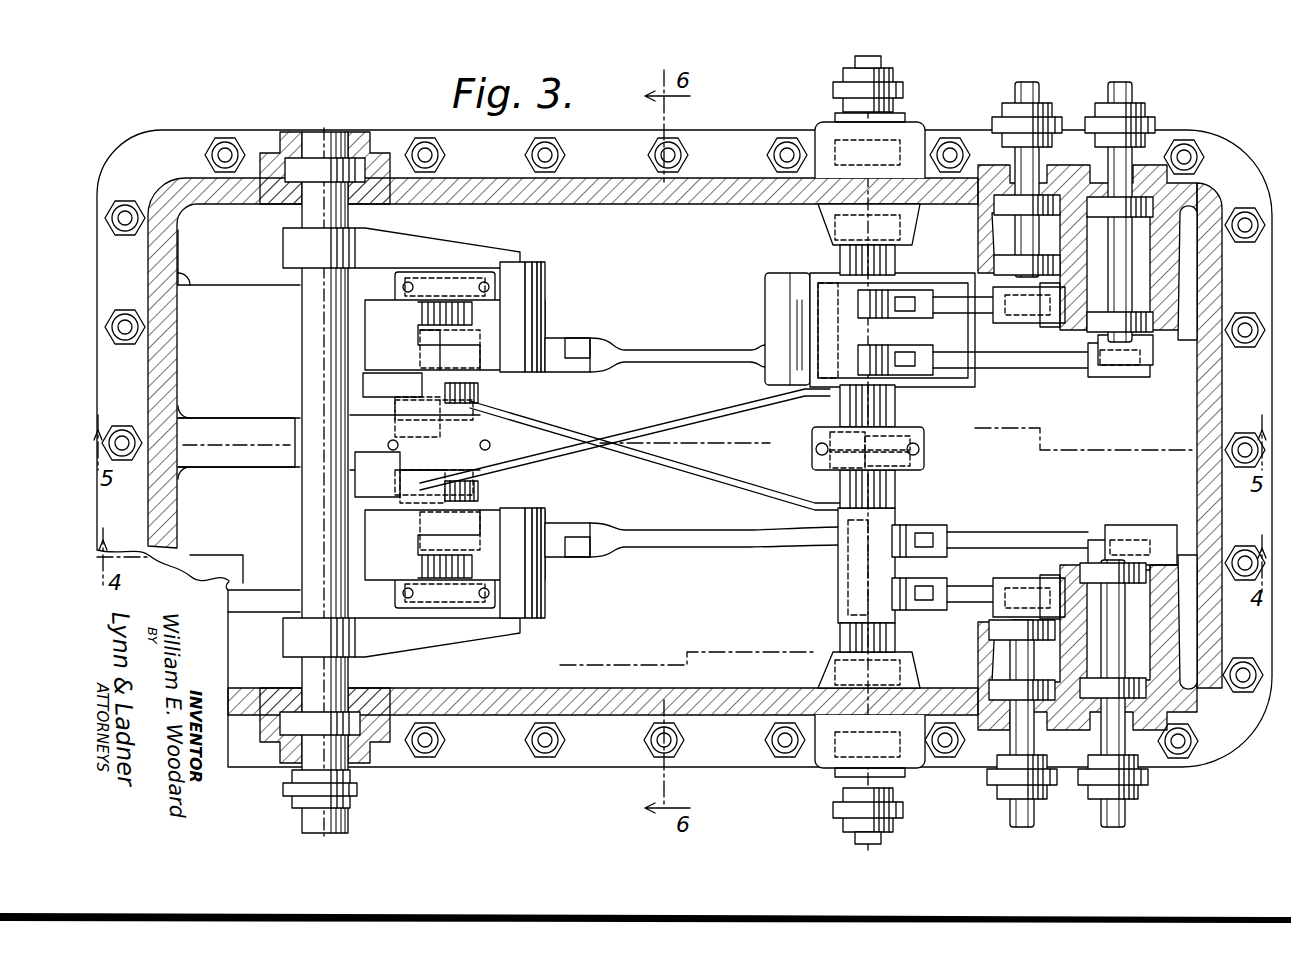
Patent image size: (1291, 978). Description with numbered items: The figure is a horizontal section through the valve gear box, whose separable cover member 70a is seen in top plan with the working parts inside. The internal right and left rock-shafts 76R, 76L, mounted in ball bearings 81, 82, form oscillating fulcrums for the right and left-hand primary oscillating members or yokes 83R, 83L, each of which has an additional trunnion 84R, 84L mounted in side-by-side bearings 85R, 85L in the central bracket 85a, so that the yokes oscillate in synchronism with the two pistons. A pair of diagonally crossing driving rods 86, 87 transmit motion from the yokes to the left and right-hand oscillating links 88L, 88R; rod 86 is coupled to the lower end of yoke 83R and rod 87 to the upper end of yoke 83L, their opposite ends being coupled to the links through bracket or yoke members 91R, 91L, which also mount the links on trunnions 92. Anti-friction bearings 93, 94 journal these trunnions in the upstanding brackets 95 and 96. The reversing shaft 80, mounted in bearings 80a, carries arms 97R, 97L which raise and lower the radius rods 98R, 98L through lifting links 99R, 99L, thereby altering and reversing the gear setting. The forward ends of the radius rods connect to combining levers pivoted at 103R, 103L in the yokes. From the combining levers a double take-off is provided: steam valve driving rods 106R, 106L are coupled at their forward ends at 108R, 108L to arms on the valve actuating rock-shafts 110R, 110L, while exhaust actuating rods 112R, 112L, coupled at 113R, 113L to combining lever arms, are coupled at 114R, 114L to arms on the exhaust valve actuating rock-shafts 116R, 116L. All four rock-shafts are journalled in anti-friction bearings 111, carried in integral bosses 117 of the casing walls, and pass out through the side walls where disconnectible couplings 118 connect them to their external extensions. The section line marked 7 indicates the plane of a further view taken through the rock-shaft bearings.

The cover member 70a is at (180, 207).
The reversing shaft 80 is at (302, 496).
The bearings 80a is at (302, 168).
The upstanding bracket 95 is at (250, 288).
The upstanding bracket 96 is at (228, 420).
The arm 97L is at (412, 252).
The arm 97R is at (383, 648).
The left-hand oscillating link 88L is at (455, 335).
The right-hand oscillating link 88R is at (455, 545).
The bracket or yoke member 91L is at (365, 378).
The bracket or yoke member 91R is at (478, 492).
The trunnions 92 is at (470, 292).
The anti-friction bearing 93 is at (500, 263).
The anti-friction bearing 94 is at (505, 410).
The driving rod 86 is at (690, 465).
The driving rod 87 is at (658, 427).
The radius rod 98L is at (662, 352).
The radius rod 98R is at (710, 542).
The lifting link 99L is at (583, 340).
The lifting link 99R is at (590, 548).
The left-hand primary oscillating member 83L is at (768, 281).
The right-hand primary oscillating member 83R is at (838, 573).
The bearing 82 is at (835, 230).
The bearing 81 is at (893, 140).
The left rock-shaft 76L is at (853, 112).
The right rock-shaft 76R is at (853, 790).
The shaft end 7 is at (880, 64).
The pivot 103L is at (830, 285).
The pivot 103R is at (850, 580).
The pivot or trunnion 84L is at (888, 440).
The pivot or trunnion 84R is at (895, 466).
The bearing 85L is at (905, 442).
The bearing 85R is at (925, 462).
The central bracket 85a is at (812, 458).
The pivotal coupling 113L is at (895, 332).
The pivotal coupling 113R is at (898, 612).
The actuating rod 112L is at (990, 326).
The actuating rod 112R is at (966, 590).
The pivotal coupling 114L is at (1052, 328).
The pivotal coupling 114R is at (1048, 590).
The steam valve driving rod 106L is at (998, 362).
The steam valve driving rod 106R is at (1026, 535).
The pivotal coupling 108L is at (1130, 378).
The pivotal coupling 108R is at (1158, 527).
The exhaust valve actuating rock-shaft 116L is at (1015, 228).
The exhaust valve actuating rock-shaft 116R is at (1012, 660).
The valve actuating rock-shaft 110L is at (1130, 272).
The valve actuating rock-shaft 110R is at (1118, 668).
The anti-friction bearings 111 is at (1100, 175).
The integral bosses 117 is at (1000, 262).
The disconnectible couplings 118 is at (1092, 122).